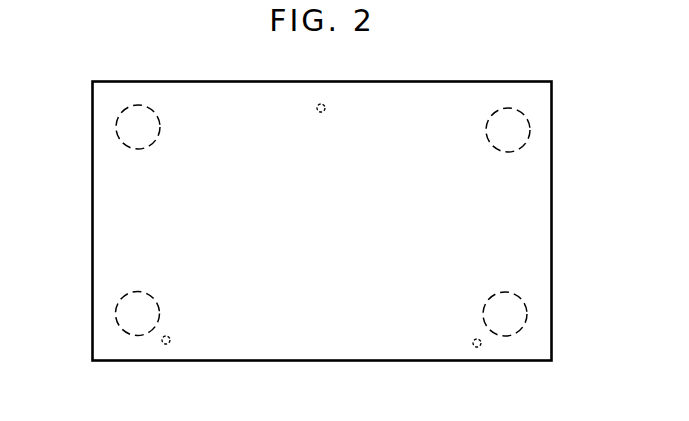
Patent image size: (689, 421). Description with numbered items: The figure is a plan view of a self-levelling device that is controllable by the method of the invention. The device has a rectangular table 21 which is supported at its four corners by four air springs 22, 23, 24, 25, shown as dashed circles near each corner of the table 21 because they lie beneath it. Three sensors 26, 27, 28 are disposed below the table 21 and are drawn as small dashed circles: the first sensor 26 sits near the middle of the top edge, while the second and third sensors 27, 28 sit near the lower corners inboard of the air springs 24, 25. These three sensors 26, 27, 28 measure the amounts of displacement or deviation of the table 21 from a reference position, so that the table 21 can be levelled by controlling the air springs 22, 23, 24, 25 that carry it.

The table 21 is at (543, 189).
The air spring 22 is at (131, 106).
The air spring 23 is at (507, 108).
The air spring 24 is at (116, 312).
The air spring 25 is at (523, 318).
The sensor 26 is at (321, 104).
The sensor 27 is at (166, 344).
The sensor 28 is at (477, 347).